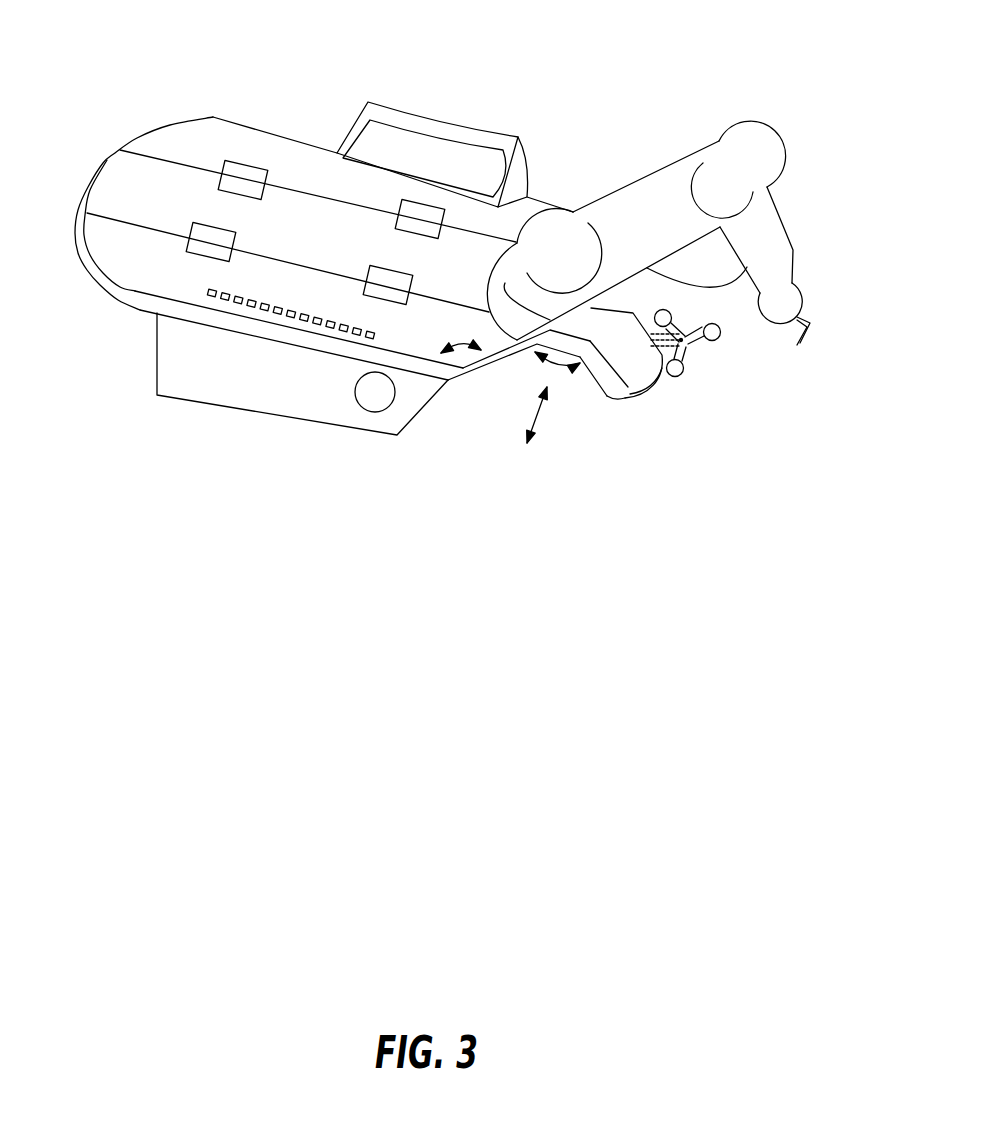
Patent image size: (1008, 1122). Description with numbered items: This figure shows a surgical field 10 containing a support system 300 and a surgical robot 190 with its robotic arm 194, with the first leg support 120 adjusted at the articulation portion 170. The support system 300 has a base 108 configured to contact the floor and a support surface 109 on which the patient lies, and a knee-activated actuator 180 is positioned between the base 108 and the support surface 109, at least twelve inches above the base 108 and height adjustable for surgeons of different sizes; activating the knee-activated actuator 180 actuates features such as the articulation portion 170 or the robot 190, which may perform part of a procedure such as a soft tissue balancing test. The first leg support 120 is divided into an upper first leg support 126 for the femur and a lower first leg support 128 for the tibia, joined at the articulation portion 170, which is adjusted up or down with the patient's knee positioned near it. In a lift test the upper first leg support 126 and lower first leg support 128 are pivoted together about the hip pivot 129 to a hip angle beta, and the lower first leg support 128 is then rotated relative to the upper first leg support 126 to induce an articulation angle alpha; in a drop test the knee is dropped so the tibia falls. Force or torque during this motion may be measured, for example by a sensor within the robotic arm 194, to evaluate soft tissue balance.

The surgical field 10 is at (513, 28).
The support system 300 is at (229, 75).
The support surface 109 is at (152, 278).
The base 108 is at (237, 408).
The knee-activated actuator 180 is at (378, 405).
The hip pivot 129 is at (463, 373).
The upper first leg support 126 is at (493, 360).
The lower first leg support 128 is at (627, 398).
The first leg support 120 is at (643, 362).
The articulation portion 170 is at (568, 343).
The surgical robot 190 is at (732, 105).
The robotic arm 194 is at (750, 195).